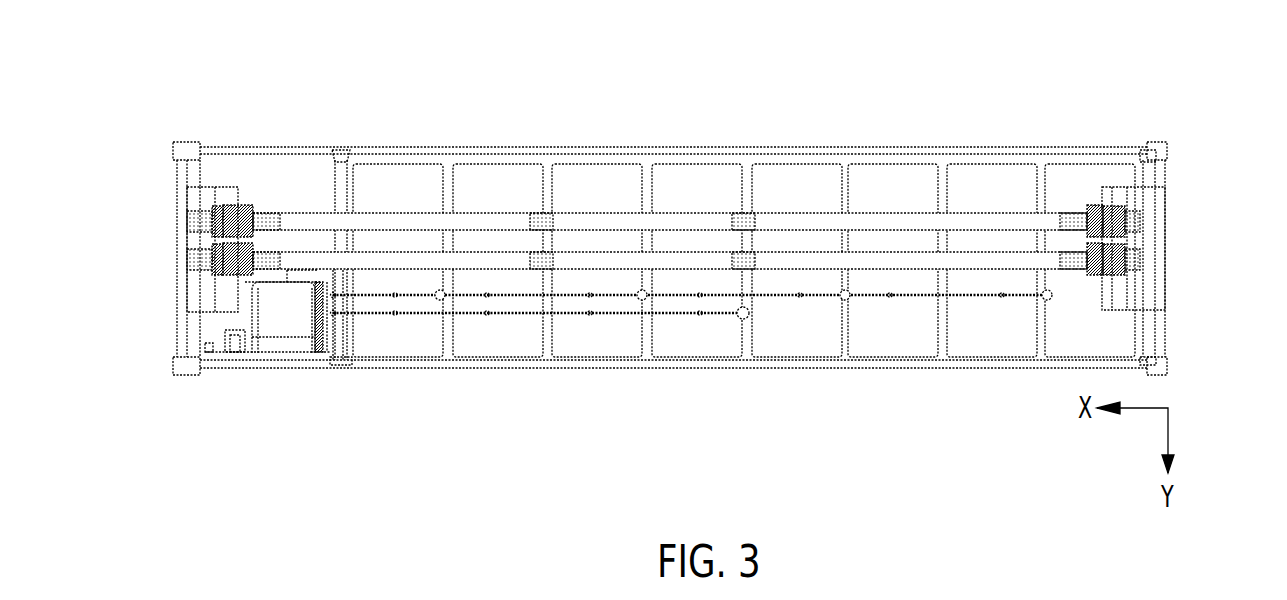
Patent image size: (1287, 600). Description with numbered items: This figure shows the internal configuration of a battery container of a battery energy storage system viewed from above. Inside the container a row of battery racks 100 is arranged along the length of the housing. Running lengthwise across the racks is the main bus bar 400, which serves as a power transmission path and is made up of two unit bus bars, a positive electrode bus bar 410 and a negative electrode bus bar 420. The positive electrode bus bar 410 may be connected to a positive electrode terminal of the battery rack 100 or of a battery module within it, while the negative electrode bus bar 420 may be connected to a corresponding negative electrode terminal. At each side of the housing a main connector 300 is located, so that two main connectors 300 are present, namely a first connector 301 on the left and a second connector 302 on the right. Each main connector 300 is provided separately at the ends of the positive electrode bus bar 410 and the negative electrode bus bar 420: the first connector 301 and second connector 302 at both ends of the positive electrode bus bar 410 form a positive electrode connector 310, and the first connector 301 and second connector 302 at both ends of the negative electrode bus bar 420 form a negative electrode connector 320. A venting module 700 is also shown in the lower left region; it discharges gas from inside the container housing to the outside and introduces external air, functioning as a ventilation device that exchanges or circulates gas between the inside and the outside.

The battery rack 100 is at (408, 203).
The main connector 300 is at (666, 249).
The first connector 301 is at (145, 249).
The second connector 302 is at (1191, 248).
The positive electrode connector 310 is at (197, 221).
The negative electrode connector 320 is at (197, 260).
The main bus bar 400 is at (670, 152).
The positive electrode bus bar 410 is at (607, 220).
The negative electrode bus bar 420 is at (672, 262).
The venting module 700 is at (283, 318).